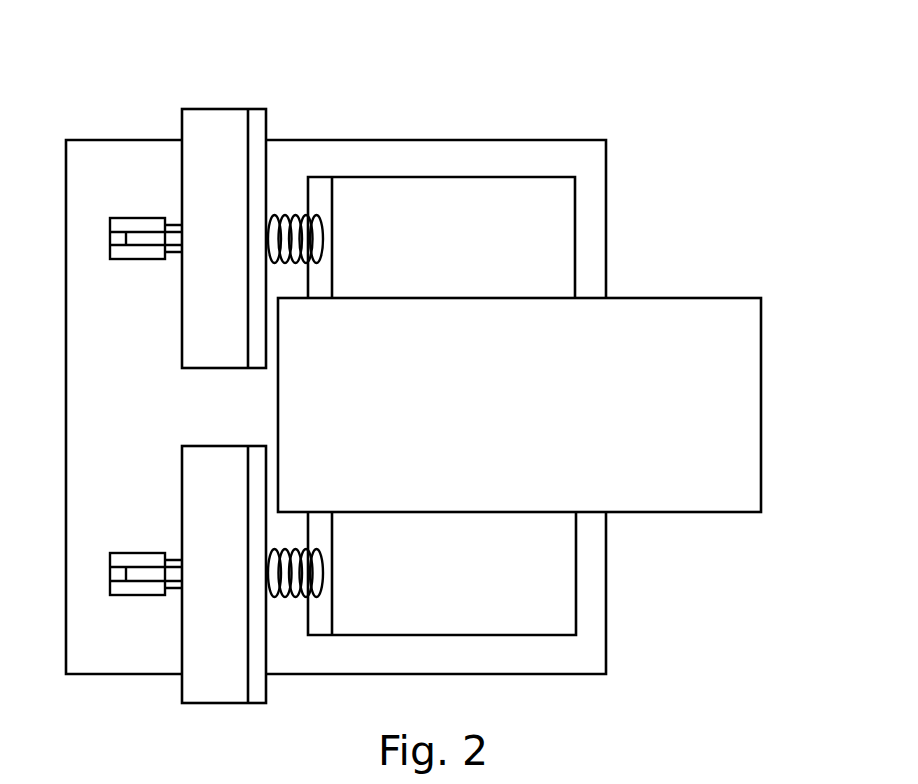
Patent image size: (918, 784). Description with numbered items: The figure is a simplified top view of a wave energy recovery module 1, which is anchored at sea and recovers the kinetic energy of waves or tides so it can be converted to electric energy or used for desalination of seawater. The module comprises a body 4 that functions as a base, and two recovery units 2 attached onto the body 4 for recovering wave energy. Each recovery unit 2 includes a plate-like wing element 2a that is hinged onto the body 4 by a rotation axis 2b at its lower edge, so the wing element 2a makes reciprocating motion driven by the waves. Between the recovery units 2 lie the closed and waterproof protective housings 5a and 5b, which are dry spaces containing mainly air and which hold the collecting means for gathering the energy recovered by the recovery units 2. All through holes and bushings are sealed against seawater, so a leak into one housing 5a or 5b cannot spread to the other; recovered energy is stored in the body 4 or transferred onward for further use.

The wave energy recovery module 1 is at (716, 109).
The recovery unit 2 is at (130, 119).
The wing element 2a is at (222, 123).
The rotation axis 2b is at (133, 260).
The body 4 is at (542, 148).
The protective housing 5a is at (442, 192).
The protective housing 5b is at (718, 310).